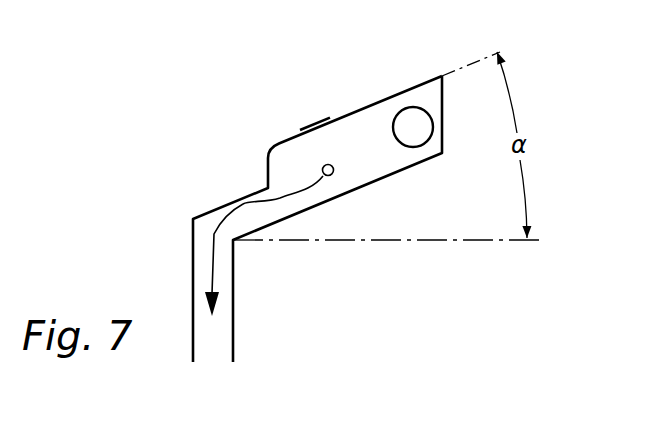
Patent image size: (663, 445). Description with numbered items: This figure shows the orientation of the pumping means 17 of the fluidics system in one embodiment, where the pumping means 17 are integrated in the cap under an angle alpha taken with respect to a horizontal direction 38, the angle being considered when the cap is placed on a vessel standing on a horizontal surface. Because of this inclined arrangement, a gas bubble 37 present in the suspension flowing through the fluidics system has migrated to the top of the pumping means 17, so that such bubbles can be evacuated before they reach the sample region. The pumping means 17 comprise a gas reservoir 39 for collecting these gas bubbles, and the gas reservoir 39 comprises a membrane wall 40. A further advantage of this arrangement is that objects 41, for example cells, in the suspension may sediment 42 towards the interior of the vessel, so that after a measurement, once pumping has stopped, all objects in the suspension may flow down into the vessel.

The pumping means 17 is at (258, 131).
The gas bubble 37 is at (413, 120).
The horizontal direction 38 is at (483, 241).
The gas reservoir 39 is at (360, 139).
The membrane wall 40 is at (313, 128).
The objects 41 is at (333, 174).
The sediment 42 is at (210, 270).